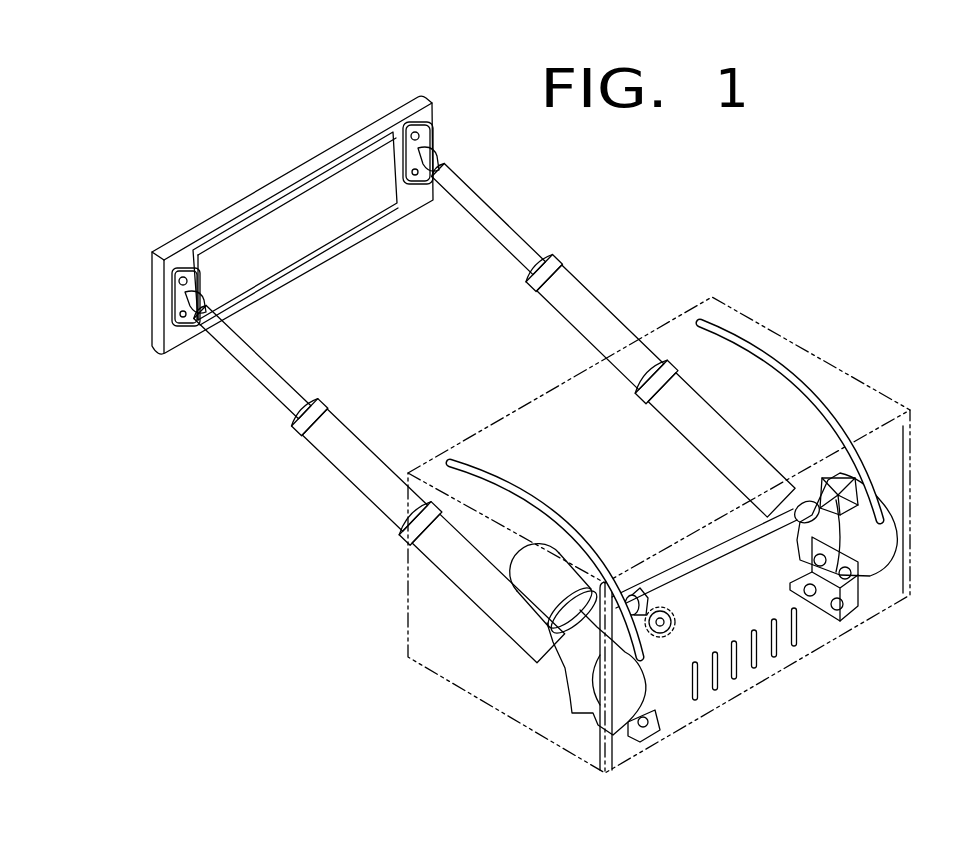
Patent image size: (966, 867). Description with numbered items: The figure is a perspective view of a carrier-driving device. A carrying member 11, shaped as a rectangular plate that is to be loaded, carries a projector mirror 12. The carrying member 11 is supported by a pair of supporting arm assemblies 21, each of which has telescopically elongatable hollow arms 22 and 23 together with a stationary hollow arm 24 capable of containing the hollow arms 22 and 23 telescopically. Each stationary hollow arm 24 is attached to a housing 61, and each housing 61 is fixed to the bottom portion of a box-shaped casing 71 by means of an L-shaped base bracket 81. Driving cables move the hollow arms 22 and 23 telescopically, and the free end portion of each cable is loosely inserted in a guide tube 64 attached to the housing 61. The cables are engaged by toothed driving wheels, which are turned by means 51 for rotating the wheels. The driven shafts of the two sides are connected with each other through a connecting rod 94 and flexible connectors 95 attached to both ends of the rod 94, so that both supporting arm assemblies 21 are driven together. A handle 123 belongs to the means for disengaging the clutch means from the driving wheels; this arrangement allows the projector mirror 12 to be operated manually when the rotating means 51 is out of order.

The carrying member 11 is at (283, 181).
The projector mirror 12 is at (303, 233).
The supporting arm assembly 21 is at (494, 413).
The hollow arm 22 is at (528, 224).
The hollow arm 23 is at (610, 320).
The stationary hollow arm 24 is at (717, 423).
The rotating means 51 is at (533, 573).
The housing 61 is at (547, 670).
The guide tube 64 is at (813, 393).
The box-shaped casing 71 is at (832, 360).
The L-shaped base bracket 81 is at (652, 733).
The connecting rod 94 is at (725, 558).
The flexible connector 95 is at (802, 503).
The handle 123 is at (673, 627).